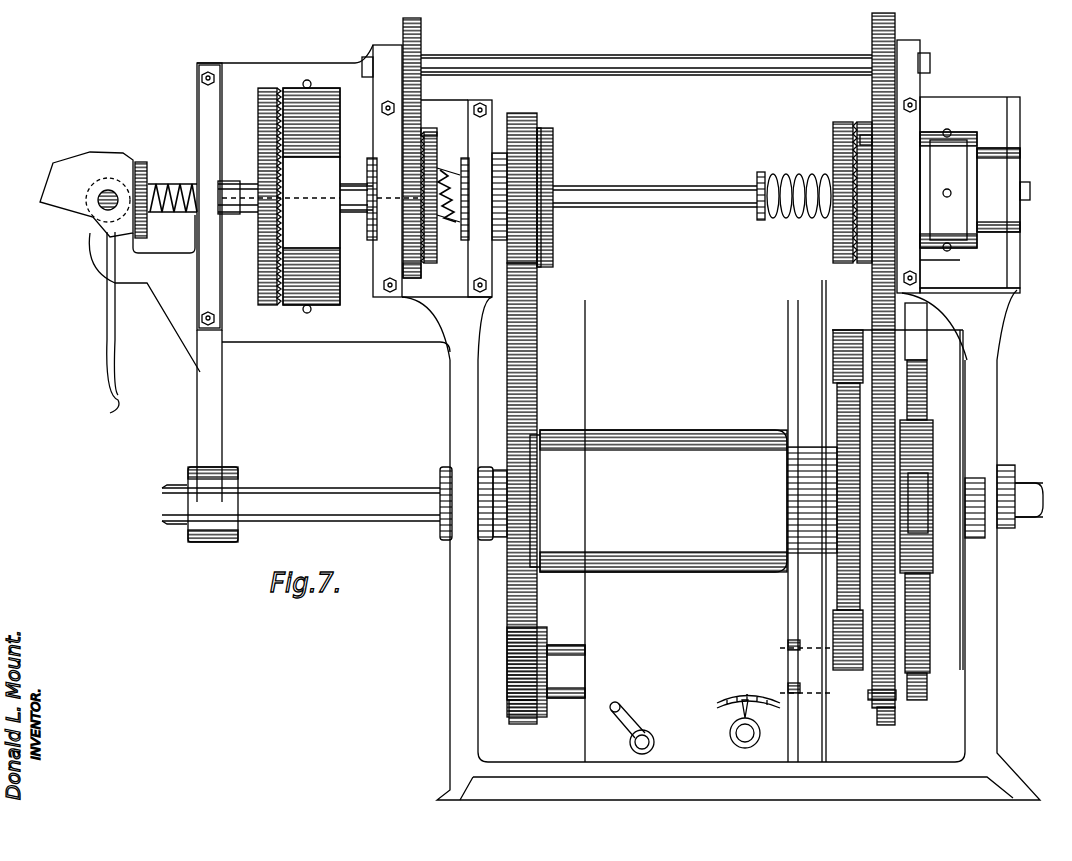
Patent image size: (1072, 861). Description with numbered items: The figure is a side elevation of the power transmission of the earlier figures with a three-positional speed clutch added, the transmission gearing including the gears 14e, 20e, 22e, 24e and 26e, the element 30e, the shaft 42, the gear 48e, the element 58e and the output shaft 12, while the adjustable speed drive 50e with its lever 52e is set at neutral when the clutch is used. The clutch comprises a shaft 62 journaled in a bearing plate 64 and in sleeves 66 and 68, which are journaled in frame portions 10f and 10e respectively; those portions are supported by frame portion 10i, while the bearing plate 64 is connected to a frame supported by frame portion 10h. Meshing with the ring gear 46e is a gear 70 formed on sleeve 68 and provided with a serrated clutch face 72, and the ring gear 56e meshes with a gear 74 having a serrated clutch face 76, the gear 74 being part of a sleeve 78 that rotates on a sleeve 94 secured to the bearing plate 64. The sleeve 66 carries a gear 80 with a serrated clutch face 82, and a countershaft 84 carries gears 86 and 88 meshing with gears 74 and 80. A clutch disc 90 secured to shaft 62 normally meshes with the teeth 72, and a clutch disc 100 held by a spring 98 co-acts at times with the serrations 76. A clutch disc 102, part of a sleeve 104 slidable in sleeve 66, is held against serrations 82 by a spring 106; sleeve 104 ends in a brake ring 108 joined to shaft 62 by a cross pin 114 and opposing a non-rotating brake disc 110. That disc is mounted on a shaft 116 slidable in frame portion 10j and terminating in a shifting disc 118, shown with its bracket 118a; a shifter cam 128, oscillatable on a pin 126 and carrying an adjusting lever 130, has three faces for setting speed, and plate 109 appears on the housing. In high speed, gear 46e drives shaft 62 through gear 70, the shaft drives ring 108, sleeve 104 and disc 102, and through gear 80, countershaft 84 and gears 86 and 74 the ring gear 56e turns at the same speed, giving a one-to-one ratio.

The frame portion 10e is at (484, 122).
The frame portion 10f is at (383, 255).
The frame portion 10h is at (988, 367).
The frame portion 10i is at (483, 370).
The frame portion 10j is at (215, 302).
The output shaft 12 is at (1022, 485).
The transmission gear 14e is at (925, 490).
The transmission gear 20e is at (925, 570).
The transmission gear 22e is at (920, 400).
The transmission gear 24e is at (833, 358).
The transmission gear 26e is at (836, 408).
The transmission element 30e is at (605, 442).
The shaft 42 is at (330, 495).
The ring gear 46e is at (525, 392).
The transmission gear 48e is at (545, 708).
The adjustable speed drive 50e is at (756, 570).
The lever 52e is at (626, 726).
The ring gear 56e is at (890, 725).
The transmission element 58e is at (878, 698).
The shaft 62 is at (636, 192).
The bearing plate 64 is at (1012, 247).
The sleeve 66 is at (376, 236).
The sleeve 68 is at (470, 238).
The gear 70 is at (532, 120).
The serrated clutch face 72 is at (550, 142).
The gear 74 is at (870, 138).
The serrated clutch face 76 is at (866, 130).
The sleeve 78 is at (972, 147).
The gear 80 is at (412, 278).
The serrated clutch face 82 is at (427, 134).
The countershaft 84 is at (658, 62).
The gear 86 is at (875, 30).
The gear 88 is at (421, 33).
The clutch disc 90 is at (553, 168).
The sleeve 94 is at (998, 193).
The spring 98 is at (783, 176).
The clutch disc 100 is at (842, 122).
The clutch disc 102 is at (432, 135).
The sleeve 104 is at (348, 190).
The spring 106 is at (444, 172).
The brake ring 108 is at (300, 105).
The plate 109 is at (945, 260).
The brake disc 110 is at (260, 283).
The cross pin 114 is at (308, 87).
The shaft 116 is at (155, 182).
The shifting disc 118 is at (140, 162).
The bracket 118a is at (164, 234).
The pin 126 is at (98, 208).
The shifter cam 128 is at (62, 210).
The adjusting lever 130 is at (107, 310).